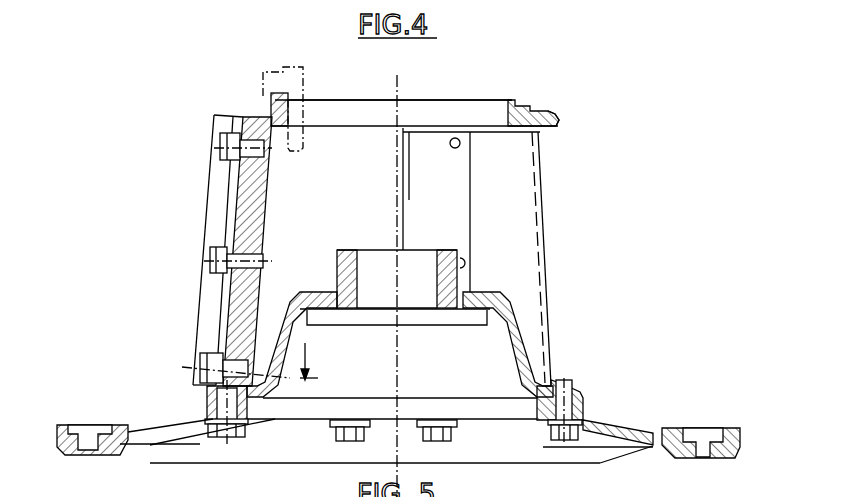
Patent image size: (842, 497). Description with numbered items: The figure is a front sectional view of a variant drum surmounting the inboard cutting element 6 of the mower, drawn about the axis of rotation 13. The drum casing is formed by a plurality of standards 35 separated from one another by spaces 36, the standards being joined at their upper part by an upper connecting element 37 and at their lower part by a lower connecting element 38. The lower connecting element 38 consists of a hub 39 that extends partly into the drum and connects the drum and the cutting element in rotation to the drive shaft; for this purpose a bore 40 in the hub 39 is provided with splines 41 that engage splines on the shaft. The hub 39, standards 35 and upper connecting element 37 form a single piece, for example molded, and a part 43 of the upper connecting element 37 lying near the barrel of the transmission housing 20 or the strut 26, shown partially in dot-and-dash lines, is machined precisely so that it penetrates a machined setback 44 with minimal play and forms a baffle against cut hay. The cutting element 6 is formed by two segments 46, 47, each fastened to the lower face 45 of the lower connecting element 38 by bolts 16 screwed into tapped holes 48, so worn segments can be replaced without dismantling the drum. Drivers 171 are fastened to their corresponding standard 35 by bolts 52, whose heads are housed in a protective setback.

The inboard cutting element 6 is at (140, 422).
The axis of rotation 13 is at (400, 84).
The bolts 16 is at (350, 440).
The housing 20 is at (304, 81).
The strut 26 is at (296, 86).
The standards 35 is at (254, 244).
The spaces 36 is at (348, 189).
The upper connecting element 37 is at (552, 120).
The lower connecting element 38 is at (584, 404).
The hub 39 is at (508, 354).
The bore 40 is at (397, 279).
The splines 41 is at (404, 248).
The part of the upper connecting element 43 is at (510, 100).
The machined setback 44 is at (268, 90).
The lower face 45 is at (430, 418).
The segment 46 is at (182, 457).
The segment 47 is at (607, 453).
The tapped holes 48 is at (563, 393).
The bolts 52 is at (222, 150).
The drivers 171 is at (220, 124).